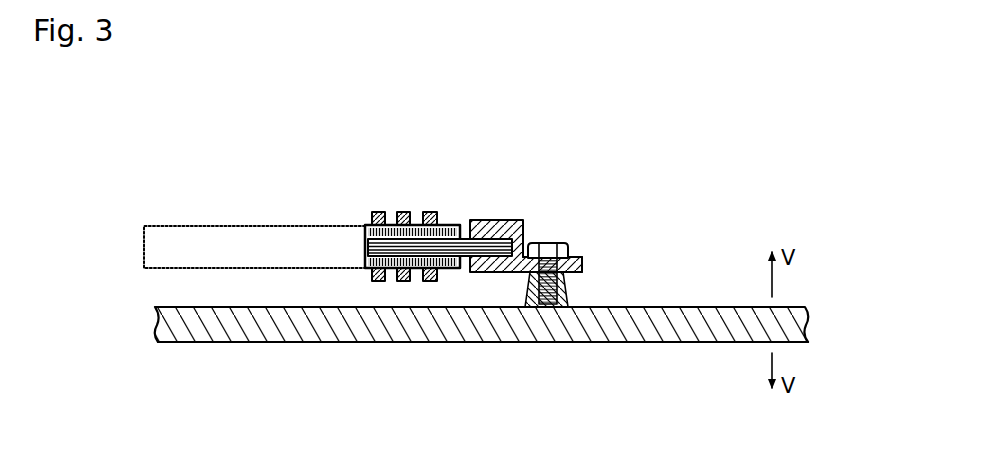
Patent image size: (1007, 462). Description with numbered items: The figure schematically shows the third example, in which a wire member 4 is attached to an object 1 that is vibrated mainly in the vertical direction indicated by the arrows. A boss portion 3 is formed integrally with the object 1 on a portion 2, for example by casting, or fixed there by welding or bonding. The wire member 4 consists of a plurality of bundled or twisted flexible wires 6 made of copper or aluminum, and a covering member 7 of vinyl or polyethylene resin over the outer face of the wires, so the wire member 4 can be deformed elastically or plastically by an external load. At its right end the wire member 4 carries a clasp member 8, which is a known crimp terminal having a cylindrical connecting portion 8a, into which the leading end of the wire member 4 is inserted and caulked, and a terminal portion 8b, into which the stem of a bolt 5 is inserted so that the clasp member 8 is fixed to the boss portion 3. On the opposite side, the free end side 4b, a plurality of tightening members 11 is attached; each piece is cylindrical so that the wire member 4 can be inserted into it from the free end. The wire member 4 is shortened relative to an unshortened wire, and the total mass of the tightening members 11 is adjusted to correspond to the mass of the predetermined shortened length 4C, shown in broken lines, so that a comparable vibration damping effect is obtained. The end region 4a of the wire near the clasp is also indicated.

The object to be vibrated 1 is at (328, 325).
The portion 2 is at (505, 347).
The boss portion 3 is at (568, 297).
The wire member 4 is at (398, 207).
The insulation coating end 4a is at (447, 275).
The free end side 4b is at (363, 278).
The predetermined shortened length 4C is at (233, 242).
The bolt 5 is at (553, 242).
The wires 6 is at (365, 229).
The covering member 7 is at (453, 220).
The clasp member 8 is at (566, 207).
The cylindrical connecting portion 8a is at (497, 218).
The terminal portion 8b is at (582, 258).
The tightening members 11 is at (430, 212).